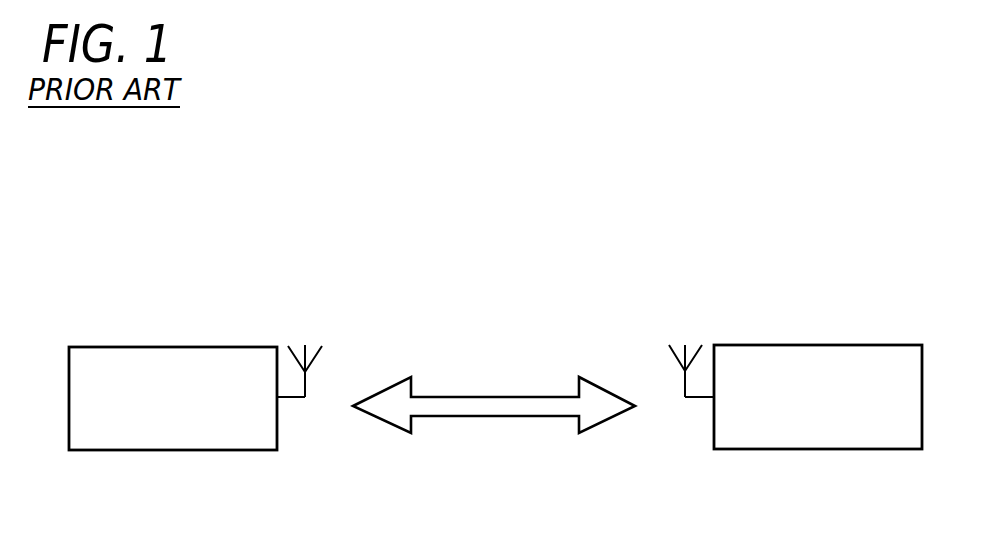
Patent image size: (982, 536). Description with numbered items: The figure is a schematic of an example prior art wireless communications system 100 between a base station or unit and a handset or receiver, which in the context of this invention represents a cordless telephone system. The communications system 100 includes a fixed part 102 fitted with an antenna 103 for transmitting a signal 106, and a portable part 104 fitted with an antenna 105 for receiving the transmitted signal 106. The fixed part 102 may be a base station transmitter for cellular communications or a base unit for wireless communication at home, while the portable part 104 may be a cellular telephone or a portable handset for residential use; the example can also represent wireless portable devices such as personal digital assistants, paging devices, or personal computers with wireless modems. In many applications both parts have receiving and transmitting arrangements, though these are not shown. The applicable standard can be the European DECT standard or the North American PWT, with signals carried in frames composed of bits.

The communications system 100 is at (295, 233).
The fixed part 102 is at (165, 346).
The antenna 103 is at (323, 322).
The portable part 104 is at (840, 345).
The antenna 105 is at (675, 318).
The signal 106 is at (472, 357).